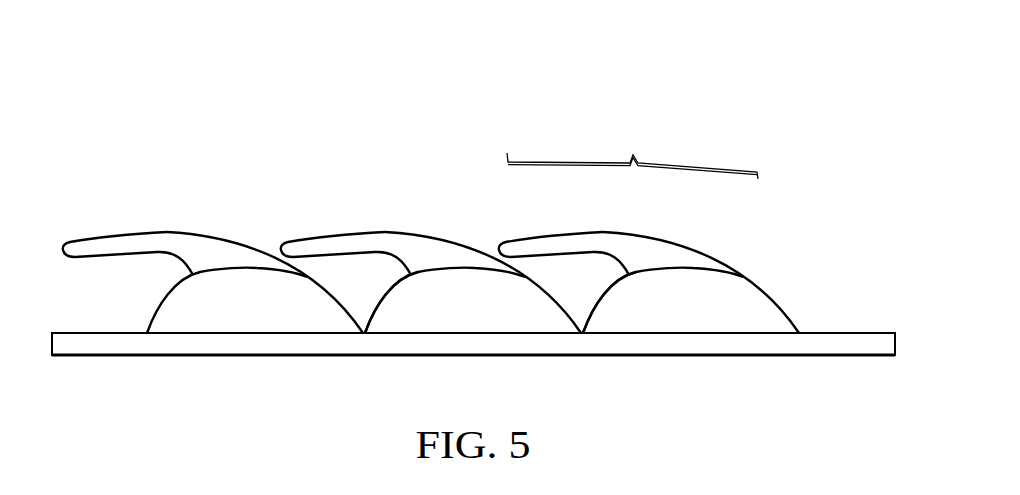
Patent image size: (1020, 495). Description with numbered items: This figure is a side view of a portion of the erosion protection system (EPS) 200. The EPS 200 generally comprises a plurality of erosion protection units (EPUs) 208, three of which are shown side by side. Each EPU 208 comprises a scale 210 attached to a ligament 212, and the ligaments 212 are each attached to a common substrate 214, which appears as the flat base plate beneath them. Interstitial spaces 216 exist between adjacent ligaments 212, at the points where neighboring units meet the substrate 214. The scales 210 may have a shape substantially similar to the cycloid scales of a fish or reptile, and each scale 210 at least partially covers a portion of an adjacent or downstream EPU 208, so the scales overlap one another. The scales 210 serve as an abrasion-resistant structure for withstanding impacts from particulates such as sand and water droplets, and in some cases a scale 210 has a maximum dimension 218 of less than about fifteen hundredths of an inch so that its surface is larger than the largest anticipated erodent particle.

The erosion protection system 200 is at (270, 98).
The erosion protection unit 208 is at (460, 239).
The scale 210 is at (113, 234).
The ligament 212 is at (222, 297).
The common substrate 214 is at (717, 357).
The interstitial space 216 is at (358, 282).
The maximum dimension 218 is at (632, 151).